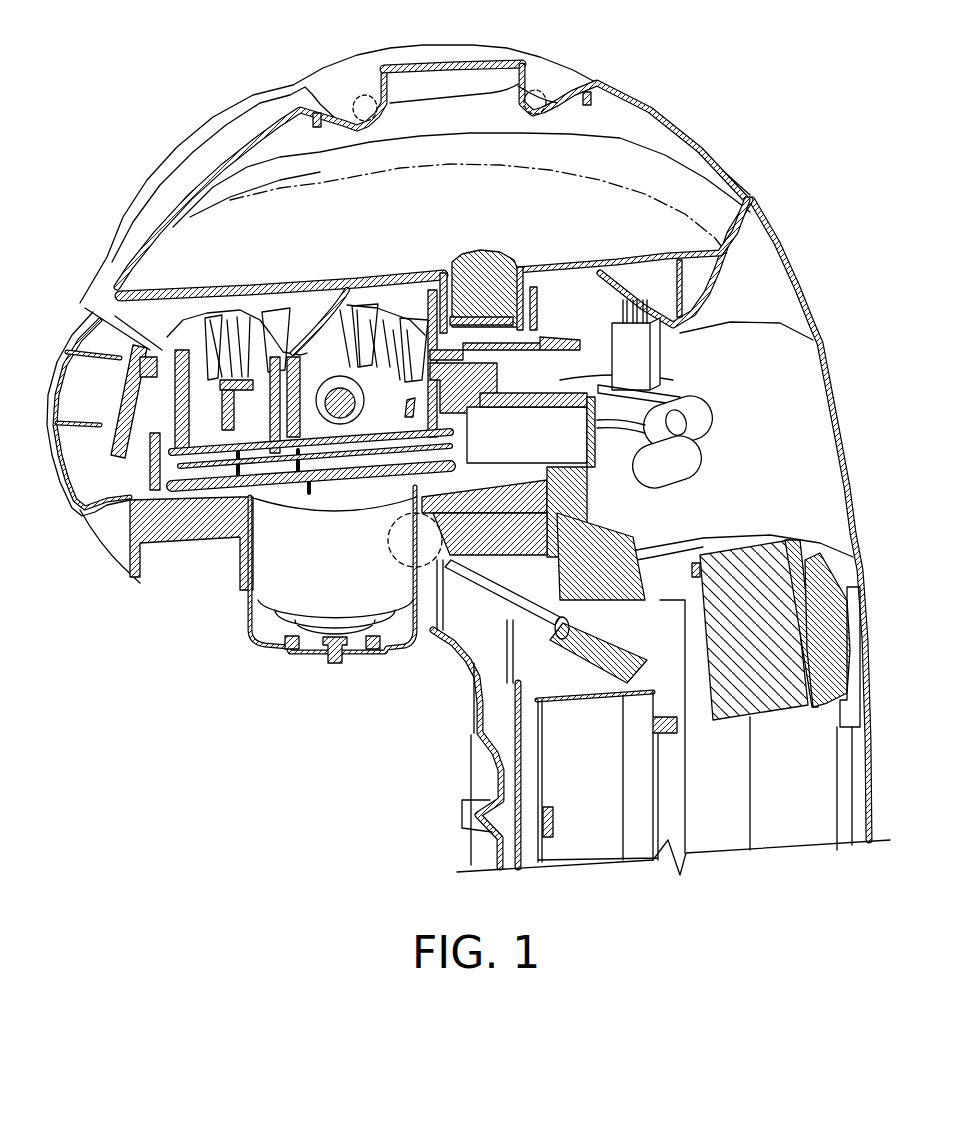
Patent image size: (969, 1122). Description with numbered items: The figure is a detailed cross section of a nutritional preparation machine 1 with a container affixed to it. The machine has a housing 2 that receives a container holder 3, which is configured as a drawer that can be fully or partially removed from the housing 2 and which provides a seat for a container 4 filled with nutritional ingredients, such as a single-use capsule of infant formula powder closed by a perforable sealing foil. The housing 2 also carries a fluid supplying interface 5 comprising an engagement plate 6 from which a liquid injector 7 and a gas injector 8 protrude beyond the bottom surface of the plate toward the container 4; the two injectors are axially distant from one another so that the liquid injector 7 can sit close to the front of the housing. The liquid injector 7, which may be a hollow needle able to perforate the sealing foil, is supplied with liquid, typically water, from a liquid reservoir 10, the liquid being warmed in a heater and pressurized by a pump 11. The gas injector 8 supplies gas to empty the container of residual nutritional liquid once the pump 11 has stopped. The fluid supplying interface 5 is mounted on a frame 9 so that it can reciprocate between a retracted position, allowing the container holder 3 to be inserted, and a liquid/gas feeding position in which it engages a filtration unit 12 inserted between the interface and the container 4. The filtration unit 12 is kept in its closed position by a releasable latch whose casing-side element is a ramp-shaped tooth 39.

The nutritional preparation machine 1 is at (219, 65).
The housing 2 is at (355, 400).
The container holder 3 is at (163, 543).
The container 4 is at (262, 608).
The fluid supplying interface 5 is at (355, 232).
The engagement plate 6 is at (300, 430).
The liquid injector 7 is at (270, 445).
The gas injector 8 is at (328, 380).
The frame 9 is at (100, 325).
The liquid reservoir 10 is at (625, 155).
The pump 11 is at (732, 569).
The filtration unit 12 is at (357, 487).
The ramp-shaped tooth 39 is at (560, 630).